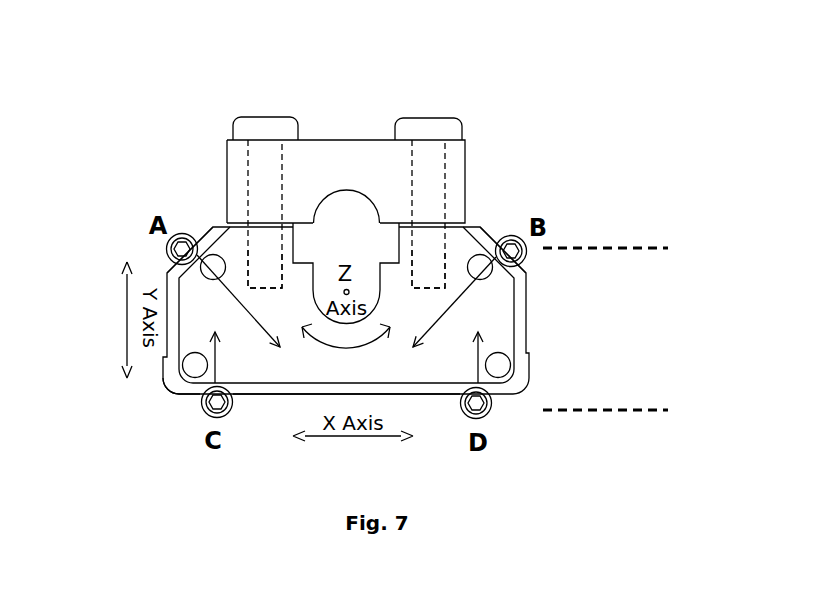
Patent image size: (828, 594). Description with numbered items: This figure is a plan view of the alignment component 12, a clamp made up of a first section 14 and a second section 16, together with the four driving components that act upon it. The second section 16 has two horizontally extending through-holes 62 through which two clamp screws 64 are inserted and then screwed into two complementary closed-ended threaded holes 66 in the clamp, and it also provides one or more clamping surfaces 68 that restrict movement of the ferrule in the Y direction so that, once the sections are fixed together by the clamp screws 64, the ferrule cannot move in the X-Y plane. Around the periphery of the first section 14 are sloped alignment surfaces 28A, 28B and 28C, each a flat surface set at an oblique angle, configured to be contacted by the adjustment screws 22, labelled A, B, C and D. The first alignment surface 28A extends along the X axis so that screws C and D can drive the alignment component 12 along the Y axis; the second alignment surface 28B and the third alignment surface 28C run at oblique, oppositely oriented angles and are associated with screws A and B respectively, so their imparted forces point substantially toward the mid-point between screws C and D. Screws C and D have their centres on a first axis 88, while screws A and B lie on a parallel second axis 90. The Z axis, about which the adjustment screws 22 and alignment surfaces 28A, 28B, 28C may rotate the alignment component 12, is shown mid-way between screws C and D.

The alignment component 12 is at (162, 392).
The first section 14 is at (528, 312).
The second section 16 is at (332, 138).
The adjustment screws 22 is at (167, 250).
The first alignment surface 28A is at (265, 393).
The second alignment surface 28B is at (205, 233).
The third alignment surface 28C is at (490, 232).
The through-holes 62 is at (246, 177).
The clamp screws 64 is at (267, 117).
The threaded holes 66 is at (247, 257).
The clamping surfaces 68 is at (390, 221).
The first axis 88 is at (626, 410).
The second axis 90 is at (626, 248).